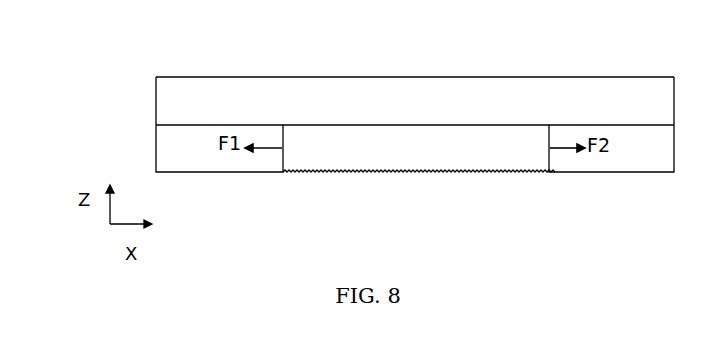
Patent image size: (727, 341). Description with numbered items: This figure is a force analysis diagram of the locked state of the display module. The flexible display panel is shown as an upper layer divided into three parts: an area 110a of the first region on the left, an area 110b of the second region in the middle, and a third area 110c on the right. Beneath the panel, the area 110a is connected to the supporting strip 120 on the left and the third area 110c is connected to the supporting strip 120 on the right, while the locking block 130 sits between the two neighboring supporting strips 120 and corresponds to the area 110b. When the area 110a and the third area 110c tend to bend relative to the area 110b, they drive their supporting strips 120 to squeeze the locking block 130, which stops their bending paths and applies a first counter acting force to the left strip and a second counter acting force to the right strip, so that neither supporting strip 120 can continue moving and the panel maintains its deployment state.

The area of first region 110a is at (221, 98).
The area of second region 110b is at (407, 95).
The third area 110c is at (605, 98).
The supporting strip 120 is at (217, 160).
The locking block 130 is at (408, 150).